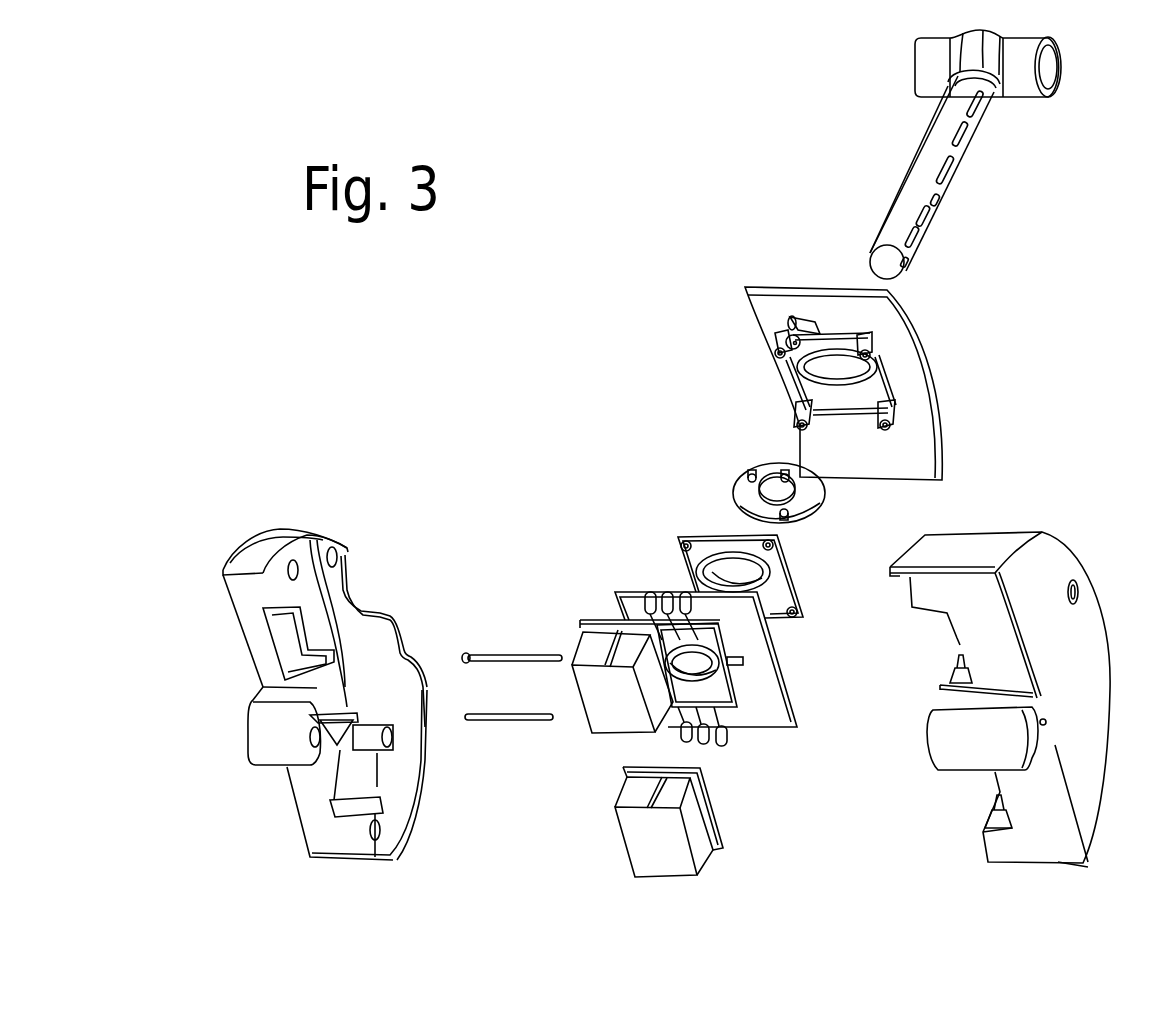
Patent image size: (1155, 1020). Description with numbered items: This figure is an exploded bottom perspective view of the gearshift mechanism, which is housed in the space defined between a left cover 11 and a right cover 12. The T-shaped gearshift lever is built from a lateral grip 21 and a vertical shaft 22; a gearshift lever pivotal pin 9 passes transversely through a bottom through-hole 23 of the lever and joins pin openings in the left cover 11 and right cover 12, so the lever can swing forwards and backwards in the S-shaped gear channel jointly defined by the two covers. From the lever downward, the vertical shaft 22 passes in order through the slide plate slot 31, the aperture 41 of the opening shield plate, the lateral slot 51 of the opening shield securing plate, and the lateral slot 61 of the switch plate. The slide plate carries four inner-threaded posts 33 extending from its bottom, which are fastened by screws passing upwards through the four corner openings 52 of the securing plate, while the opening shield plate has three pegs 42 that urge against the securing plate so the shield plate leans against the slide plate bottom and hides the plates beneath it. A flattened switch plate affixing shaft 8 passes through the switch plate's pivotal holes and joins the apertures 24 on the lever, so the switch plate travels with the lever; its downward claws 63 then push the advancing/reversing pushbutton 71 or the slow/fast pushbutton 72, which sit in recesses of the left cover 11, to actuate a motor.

The switch plate affixing shaft 8 is at (497, 655).
The gearshift lever pivotal pin 9 is at (513, 720).
The left cover 11 is at (267, 540).
The right cover 12 is at (1092, 675).
The lateral grip 21 is at (925, 62).
The vertical shaft 22 is at (903, 212).
The bottom through-hole 23 is at (910, 260).
The apertures 24 is at (940, 205).
The slide plate slot 31 is at (878, 355).
The posts 33 is at (778, 345).
The aperture 41 is at (775, 492).
The pegs 42 is at (742, 470).
The lateral slot 51 is at (745, 572).
The corner openings 52 is at (672, 537).
The lateral slot 61 is at (692, 663).
The claws 63 is at (730, 738).
The advancing/reversing pushbutton 71 is at (598, 700).
The slow/fast pushbutton 72 is at (637, 833).